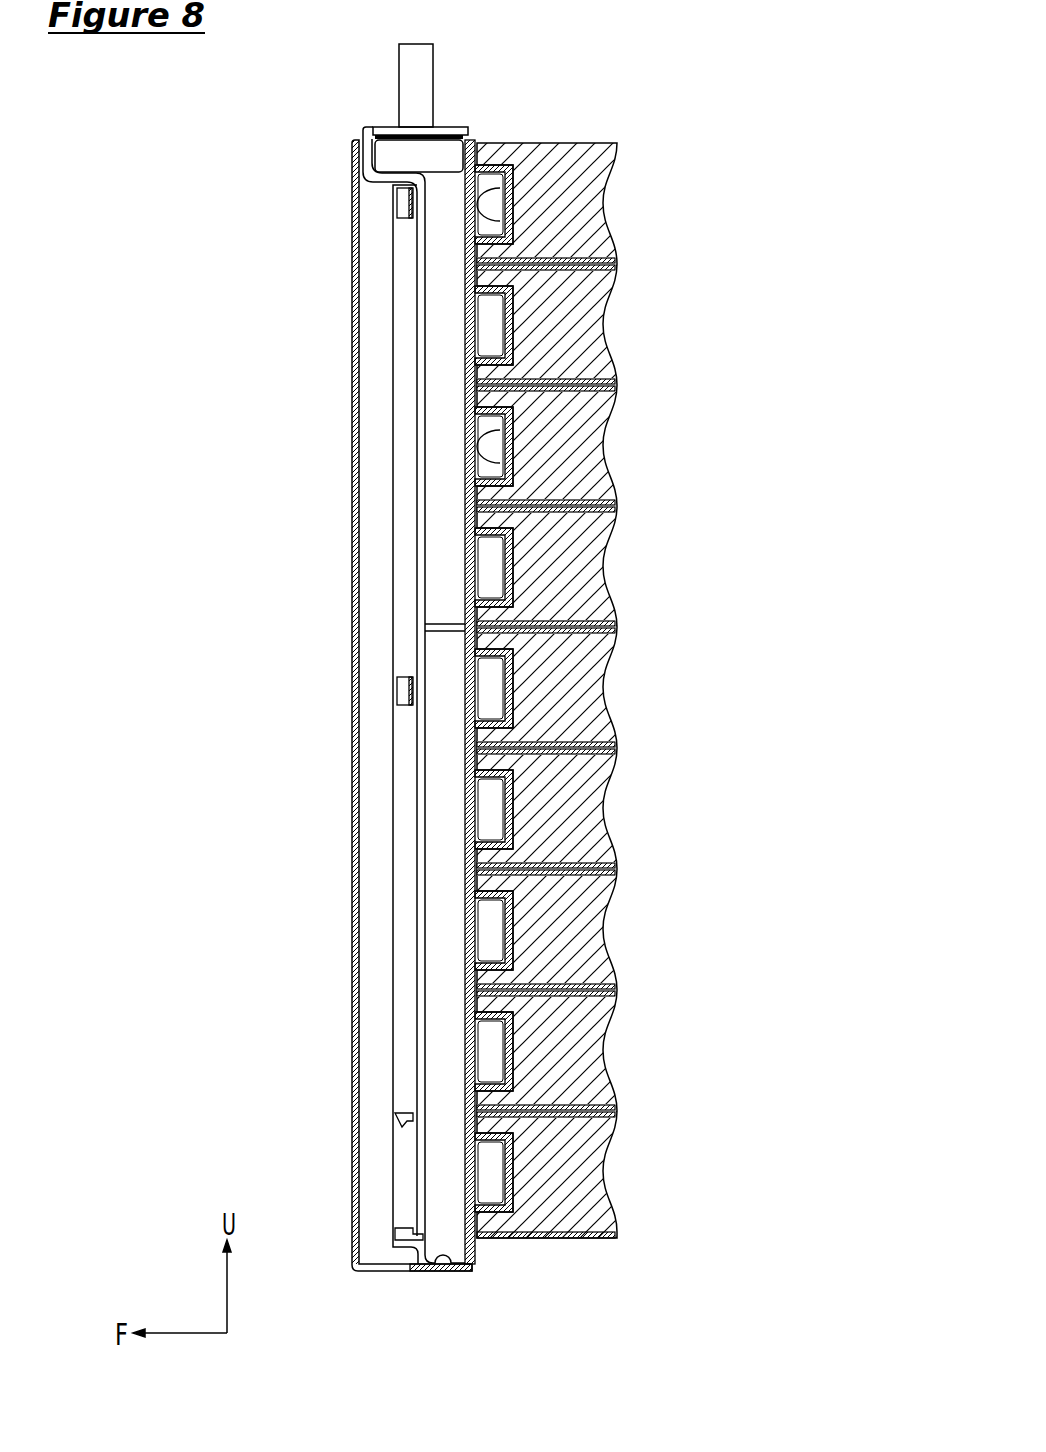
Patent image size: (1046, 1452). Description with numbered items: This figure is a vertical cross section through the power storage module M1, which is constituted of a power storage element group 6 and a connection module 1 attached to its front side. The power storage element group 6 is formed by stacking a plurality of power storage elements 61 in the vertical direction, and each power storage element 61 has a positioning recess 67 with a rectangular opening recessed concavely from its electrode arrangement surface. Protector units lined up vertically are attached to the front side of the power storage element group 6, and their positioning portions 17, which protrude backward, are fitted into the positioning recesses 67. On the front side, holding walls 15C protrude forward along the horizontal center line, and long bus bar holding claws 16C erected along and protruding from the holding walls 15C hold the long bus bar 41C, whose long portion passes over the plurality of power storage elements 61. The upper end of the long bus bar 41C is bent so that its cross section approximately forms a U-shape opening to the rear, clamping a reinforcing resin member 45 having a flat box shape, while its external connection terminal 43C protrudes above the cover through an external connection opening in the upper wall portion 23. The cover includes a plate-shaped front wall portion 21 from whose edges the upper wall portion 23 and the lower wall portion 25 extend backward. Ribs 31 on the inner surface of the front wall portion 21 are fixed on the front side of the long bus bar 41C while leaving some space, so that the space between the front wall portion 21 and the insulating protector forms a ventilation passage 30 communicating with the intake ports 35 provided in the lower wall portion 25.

The connection module 1 is at (409, 1312).
The power storage module M1 is at (642, 92).
The power storage element group 6 is at (545, 1258).
The power storage element 61 is at (575, 183).
The positioning recess 67 is at (503, 233).
The positioning portion 17 is at (505, 463).
The holding wall 15C is at (438, 1000).
The long bus bar holding claw 16C is at (398, 205).
The front wall portion 21 is at (352, 431).
The upper wall portion 23 is at (368, 128).
The lower wall portion 25 is at (382, 1273).
The ventilation passage 30 is at (376, 548).
The rib 31 is at (405, 853).
The intake port 35 is at (432, 1270).
The long bus bar 41C is at (419, 282).
The external connection terminal 43C is at (427, 85).
The reinforcing resin member 45 is at (446, 153).